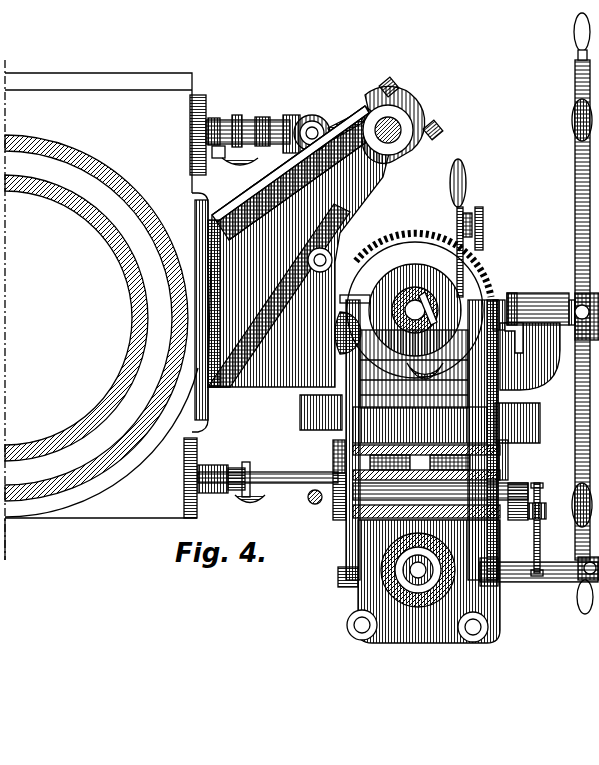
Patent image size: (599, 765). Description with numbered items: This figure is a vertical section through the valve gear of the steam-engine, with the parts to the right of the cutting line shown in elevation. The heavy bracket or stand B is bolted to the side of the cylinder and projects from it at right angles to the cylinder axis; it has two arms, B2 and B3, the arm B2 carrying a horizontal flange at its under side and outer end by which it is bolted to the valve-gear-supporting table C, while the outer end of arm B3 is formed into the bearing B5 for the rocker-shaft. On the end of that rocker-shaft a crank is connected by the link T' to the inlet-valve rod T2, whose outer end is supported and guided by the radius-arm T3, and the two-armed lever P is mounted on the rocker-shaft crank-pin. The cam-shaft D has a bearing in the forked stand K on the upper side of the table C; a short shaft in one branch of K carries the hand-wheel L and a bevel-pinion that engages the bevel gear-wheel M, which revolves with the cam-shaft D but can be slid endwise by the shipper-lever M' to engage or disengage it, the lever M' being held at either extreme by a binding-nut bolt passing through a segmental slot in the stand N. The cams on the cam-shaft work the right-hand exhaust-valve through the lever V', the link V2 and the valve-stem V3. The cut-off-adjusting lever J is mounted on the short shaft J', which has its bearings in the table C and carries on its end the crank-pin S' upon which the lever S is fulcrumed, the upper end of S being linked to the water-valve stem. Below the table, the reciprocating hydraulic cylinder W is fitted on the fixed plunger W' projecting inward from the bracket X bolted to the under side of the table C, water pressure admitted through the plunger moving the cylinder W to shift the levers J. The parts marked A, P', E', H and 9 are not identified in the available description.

The fly-wheel A is at (101, 310).
The shaft center line P' is at (8, 539).
The bracket or stand B is at (301, 246).
The arm of bracket B2 is at (297, 372).
The arm of bracket B3 is at (362, 196).
The bearing B5 is at (407, 118).
The link T' is at (346, 120).
The inlet-valve rod T2 is at (251, 125).
The radius-arm T3 is at (315, 121).
The bevel gear-wheel M is at (419, 298).
The disk E' is at (415, 287).
The cam-shaft D is at (415, 310).
The cross-head H is at (437, 308).
The shipper-lever M' is at (470, 228).
The rack 9 is at (487, 228).
The stand N is at (472, 252).
The stand K is at (534, 333).
The hand-wheel L is at (575, 313).
The valve-gear-supporting table C is at (483, 463).
The lever V' is at (522, 441).
The link V2 is at (340, 513).
The valve-stem V3 is at (273, 473).
The cut-off-adjusting lever J is at (326, 472).
The short shaft J' is at (440, 510).
The lever S is at (543, 529).
The crank-pin S' is at (547, 512).
The two-armed lever P is at (539, 581).
The hydraulic cylinder W is at (385, 572).
The fixed plunger W' is at (401, 613).
The bracket X is at (455, 640).